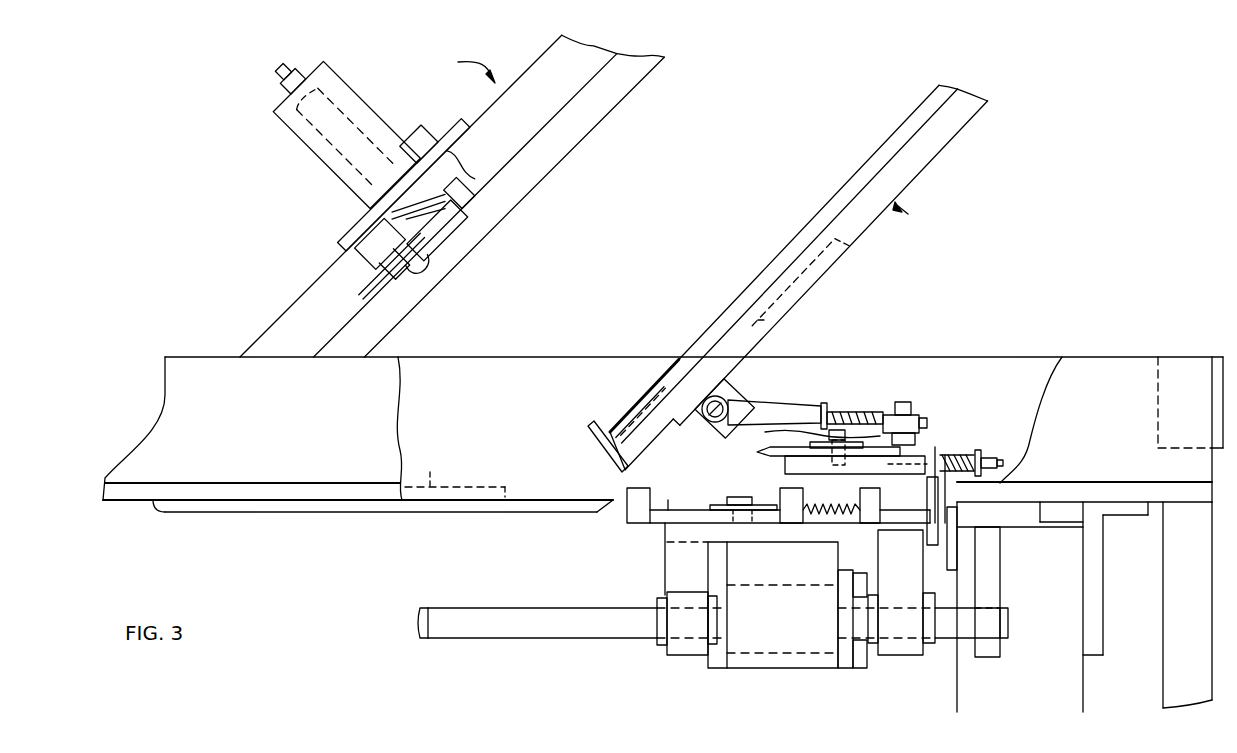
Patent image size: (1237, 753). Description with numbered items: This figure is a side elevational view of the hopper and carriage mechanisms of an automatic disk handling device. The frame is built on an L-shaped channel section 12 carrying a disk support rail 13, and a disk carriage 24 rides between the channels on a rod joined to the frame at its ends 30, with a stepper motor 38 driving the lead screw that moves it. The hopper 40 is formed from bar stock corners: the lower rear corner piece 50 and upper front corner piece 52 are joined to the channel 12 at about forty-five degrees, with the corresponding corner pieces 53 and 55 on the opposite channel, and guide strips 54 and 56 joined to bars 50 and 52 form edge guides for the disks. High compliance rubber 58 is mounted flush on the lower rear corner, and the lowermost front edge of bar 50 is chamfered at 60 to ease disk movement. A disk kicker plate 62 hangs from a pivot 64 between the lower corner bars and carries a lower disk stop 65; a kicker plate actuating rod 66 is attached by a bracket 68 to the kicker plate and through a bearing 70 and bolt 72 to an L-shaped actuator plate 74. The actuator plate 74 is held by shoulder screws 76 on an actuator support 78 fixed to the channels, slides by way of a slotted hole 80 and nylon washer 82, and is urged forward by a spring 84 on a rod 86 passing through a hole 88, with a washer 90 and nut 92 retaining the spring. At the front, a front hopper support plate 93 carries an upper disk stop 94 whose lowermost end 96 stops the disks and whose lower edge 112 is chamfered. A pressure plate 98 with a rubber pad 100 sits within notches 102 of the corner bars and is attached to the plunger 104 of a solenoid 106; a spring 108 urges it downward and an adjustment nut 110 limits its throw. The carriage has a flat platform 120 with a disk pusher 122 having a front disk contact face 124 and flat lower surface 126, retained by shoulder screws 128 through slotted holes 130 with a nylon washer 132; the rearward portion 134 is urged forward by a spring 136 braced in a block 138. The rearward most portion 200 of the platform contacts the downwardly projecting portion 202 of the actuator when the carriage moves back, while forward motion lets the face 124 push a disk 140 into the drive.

The L-shaped channel section 12 is at (364, 433).
The disk support rail 13 is at (421, 512).
The disk carriage 24 is at (795, 571).
The rod ends 30 is at (998, 580).
The stepper motor 38 is at (1055, 630).
The hopper 40 is at (635, 255).
The lower rear hopper corner piece 50 is at (792, 272).
The upper front hopper corner piece 52 is at (428, 205).
The lower hopper corner piece 53 is at (915, 213).
The guide strip 54 is at (801, 213).
The upper hopper corner piece 55 is at (463, 68).
The guide strip 56 is at (501, 194).
The high compliance rubber 58 is at (641, 413).
The chamfer 60 is at (598, 430).
The disk kicker plate 62 is at (768, 324).
The pivot 64 is at (801, 286).
The lower disk stop 65 is at (595, 448).
The kicker plate actuating rod 66 is at (788, 404).
The bracket 68 is at (724, 408).
The bearing 70 is at (920, 416).
The bolt 72 is at (907, 400).
The actuator plate 74 is at (938, 447).
The shoulder screw 76 is at (809, 435).
The actuator support 78 is at (860, 470).
The slotted hole 80 is at (757, 452).
The nylon washer 82 is at (840, 416).
The spring 84 is at (960, 455).
The rod 86 is at (970, 482).
The hole 88 is at (930, 482).
The washer 90 is at (985, 452).
The nut 92 is at (990, 468).
The front hopper support plate 93 is at (404, 185).
The upper disk stop 94 is at (380, 243).
The protruding lowermost end 96 is at (394, 264).
The pressure plate 98 is at (459, 192).
The high compliance rubber pad 100 is at (437, 230).
The notches 102 is at (460, 164).
The plunger 104 is at (419, 144).
The solenoid 106 is at (346, 134).
The spring 108 is at (392, 266).
The adjustment nut 110 is at (289, 77).
The lower edge 112 is at (419, 263).
The flat platform 120 is at (660, 545).
The disk pusher 122 is at (668, 500).
The front disk contact face 124 is at (627, 495).
The flat lower surface 126 is at (640, 523).
The shoulder screw 128 is at (738, 497).
The slotted holes 130 is at (705, 505).
The nylon washer 132 is at (783, 515).
The rearward portion 134 is at (790, 515).
The spring 136 is at (830, 520).
The block 138 is at (870, 523).
The disk 140 is at (432, 474).
The rearward most portion of platform 200 is at (965, 520).
The downwardly projecting portion 202 is at (901, 592).